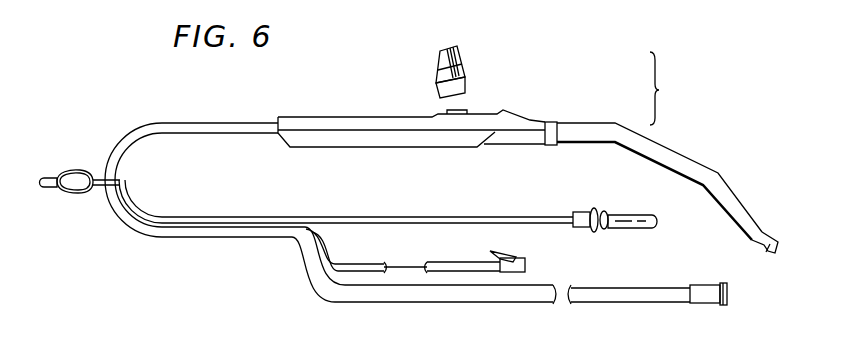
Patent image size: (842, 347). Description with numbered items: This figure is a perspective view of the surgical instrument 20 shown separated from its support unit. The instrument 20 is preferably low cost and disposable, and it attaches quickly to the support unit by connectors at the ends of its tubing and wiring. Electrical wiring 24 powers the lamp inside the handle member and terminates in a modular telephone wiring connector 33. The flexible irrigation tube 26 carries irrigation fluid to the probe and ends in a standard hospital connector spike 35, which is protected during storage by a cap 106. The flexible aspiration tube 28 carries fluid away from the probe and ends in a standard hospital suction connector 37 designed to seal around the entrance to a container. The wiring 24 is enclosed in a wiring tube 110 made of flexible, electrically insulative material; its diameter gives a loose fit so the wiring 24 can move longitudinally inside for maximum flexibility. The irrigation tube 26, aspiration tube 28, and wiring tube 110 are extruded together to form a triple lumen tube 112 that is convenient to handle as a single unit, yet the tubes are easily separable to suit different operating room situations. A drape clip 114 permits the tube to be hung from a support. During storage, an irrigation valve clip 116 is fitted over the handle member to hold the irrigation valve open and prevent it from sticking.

The surgical instrument 20 is at (178, 107).
The electrical wiring 24 is at (408, 269).
The irrigation tube 26 is at (370, 217).
The aspiration tube 28 is at (507, 303).
The modular telephone wiring connector 33 is at (525, 262).
The connector spike 35 is at (605, 208).
The suction connector 37 is at (709, 304).
The cap 106 is at (643, 230).
The wiring tube 110 is at (362, 272).
The triple lumen tube 112 is at (270, 239).
The drape clip 114 is at (82, 150).
The irrigation valve clip 116 is at (458, 51).